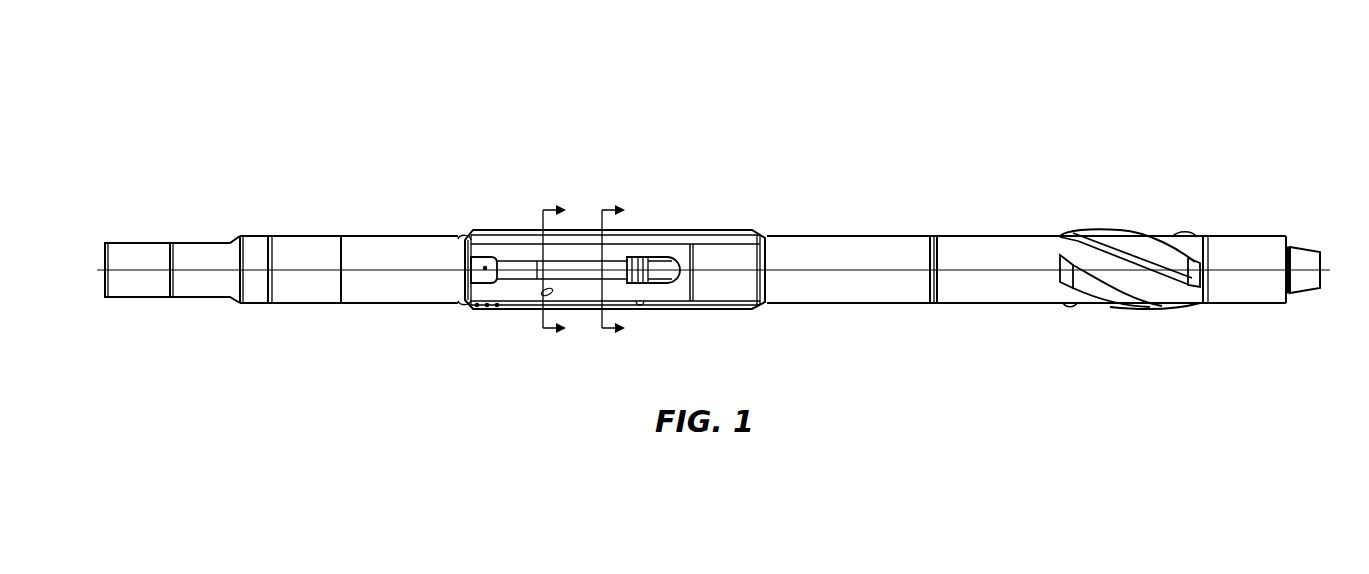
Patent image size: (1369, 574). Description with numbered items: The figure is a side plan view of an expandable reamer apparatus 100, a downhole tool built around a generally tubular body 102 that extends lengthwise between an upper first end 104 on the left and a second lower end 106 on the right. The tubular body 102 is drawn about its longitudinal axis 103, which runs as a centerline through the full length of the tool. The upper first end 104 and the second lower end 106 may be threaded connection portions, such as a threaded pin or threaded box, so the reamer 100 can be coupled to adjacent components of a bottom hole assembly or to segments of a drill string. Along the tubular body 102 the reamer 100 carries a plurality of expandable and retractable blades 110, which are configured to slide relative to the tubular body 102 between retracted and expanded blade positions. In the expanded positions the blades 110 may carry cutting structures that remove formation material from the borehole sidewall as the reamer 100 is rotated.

The expandable reamer apparatus 100 is at (365, 148).
The tubular body 102 is at (868, 248).
The longitudinal axis 103 is at (138, 272).
The upper first end 104 is at (90, 230).
The second lower end 106 is at (1325, 226).
The expandable and retractable blades 110 is at (575, 262).